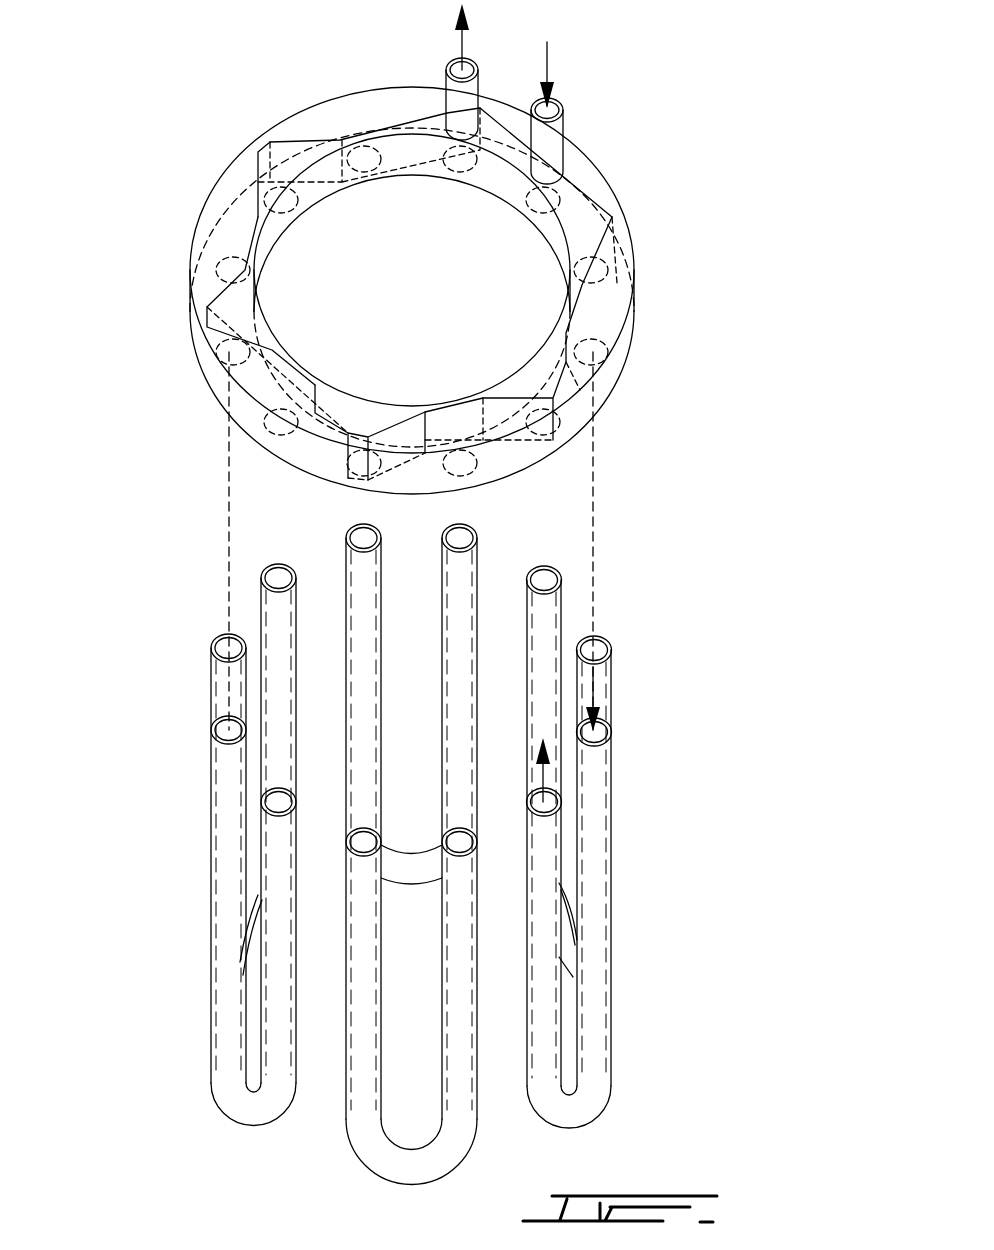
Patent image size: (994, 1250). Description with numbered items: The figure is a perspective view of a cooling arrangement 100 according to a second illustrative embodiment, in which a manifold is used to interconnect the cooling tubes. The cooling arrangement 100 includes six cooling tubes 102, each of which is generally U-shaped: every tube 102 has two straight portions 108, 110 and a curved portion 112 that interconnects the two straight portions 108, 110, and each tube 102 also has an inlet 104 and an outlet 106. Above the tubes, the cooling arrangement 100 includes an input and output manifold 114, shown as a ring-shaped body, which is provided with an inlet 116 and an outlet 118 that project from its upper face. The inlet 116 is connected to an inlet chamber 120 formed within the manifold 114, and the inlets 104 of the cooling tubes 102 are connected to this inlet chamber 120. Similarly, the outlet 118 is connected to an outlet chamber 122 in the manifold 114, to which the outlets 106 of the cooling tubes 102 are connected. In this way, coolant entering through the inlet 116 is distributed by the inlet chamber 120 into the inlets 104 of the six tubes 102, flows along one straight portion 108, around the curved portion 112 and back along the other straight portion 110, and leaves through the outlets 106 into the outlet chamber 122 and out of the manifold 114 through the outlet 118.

The cooling arrangement 100 is at (182, 454).
The cooling tube 102 is at (277, 1058).
The inlet 104 is at (597, 698).
The outlet 106 is at (543, 777).
The straight portion 108 is at (540, 967).
The straight portion 110 is at (592, 890).
The curved portion 112 is at (577, 1082).
The input and output manifold 114 is at (642, 336).
The inlet 116 is at (547, 67).
The outlet 118 is at (457, 50).
The inlet chamber 120 is at (608, 315).
The outlet chamber 122 is at (585, 232).